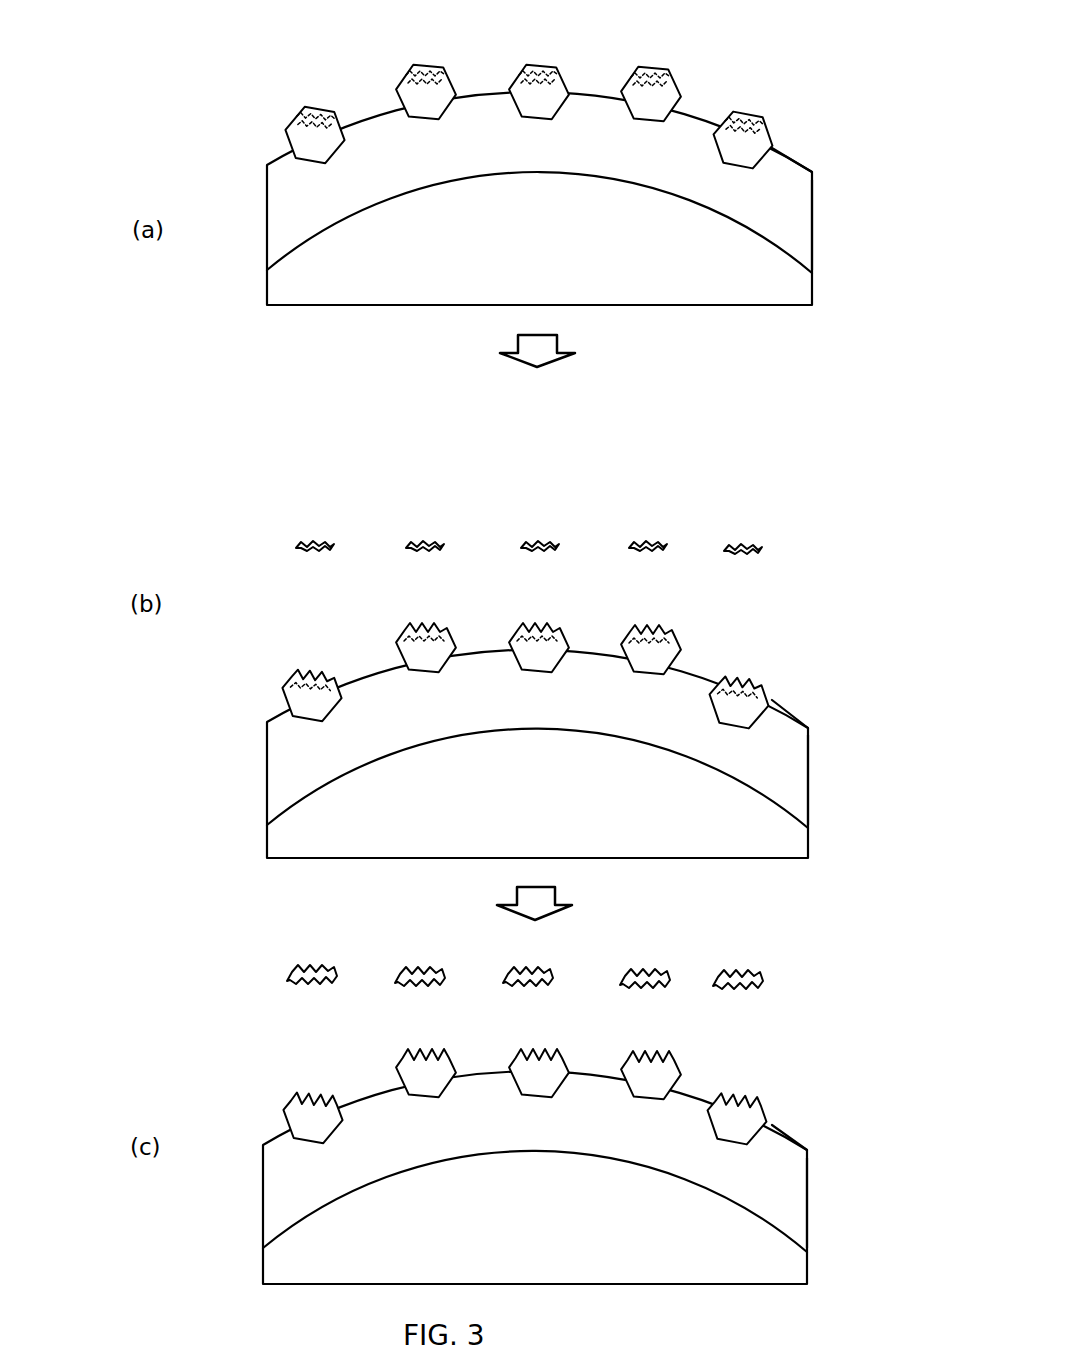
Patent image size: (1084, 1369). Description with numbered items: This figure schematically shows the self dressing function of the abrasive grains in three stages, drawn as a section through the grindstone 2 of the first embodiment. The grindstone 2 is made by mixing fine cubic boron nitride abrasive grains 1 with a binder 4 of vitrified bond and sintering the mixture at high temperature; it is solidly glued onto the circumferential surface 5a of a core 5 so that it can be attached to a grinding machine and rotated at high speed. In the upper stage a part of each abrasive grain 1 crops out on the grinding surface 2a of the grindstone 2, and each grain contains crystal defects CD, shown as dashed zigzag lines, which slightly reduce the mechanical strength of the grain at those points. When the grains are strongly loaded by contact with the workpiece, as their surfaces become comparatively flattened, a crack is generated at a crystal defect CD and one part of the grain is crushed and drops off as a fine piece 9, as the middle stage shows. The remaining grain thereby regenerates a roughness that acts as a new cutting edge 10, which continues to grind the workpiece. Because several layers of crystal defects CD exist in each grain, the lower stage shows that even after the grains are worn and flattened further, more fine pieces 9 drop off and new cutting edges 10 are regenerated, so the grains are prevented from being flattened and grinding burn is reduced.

The abrasive grain 1 is at (310, 130).
The crystal defect CD is at (336, 112).
The grindstone 2 is at (821, 123).
The grinding surface 2a is at (796, 156).
The binder 4 is at (802, 212).
The core 5 is at (787, 286).
The circumferential surface 5a is at (316, 234).
The fine piece 9 is at (334, 546).
The cutting edge 10 is at (327, 668).